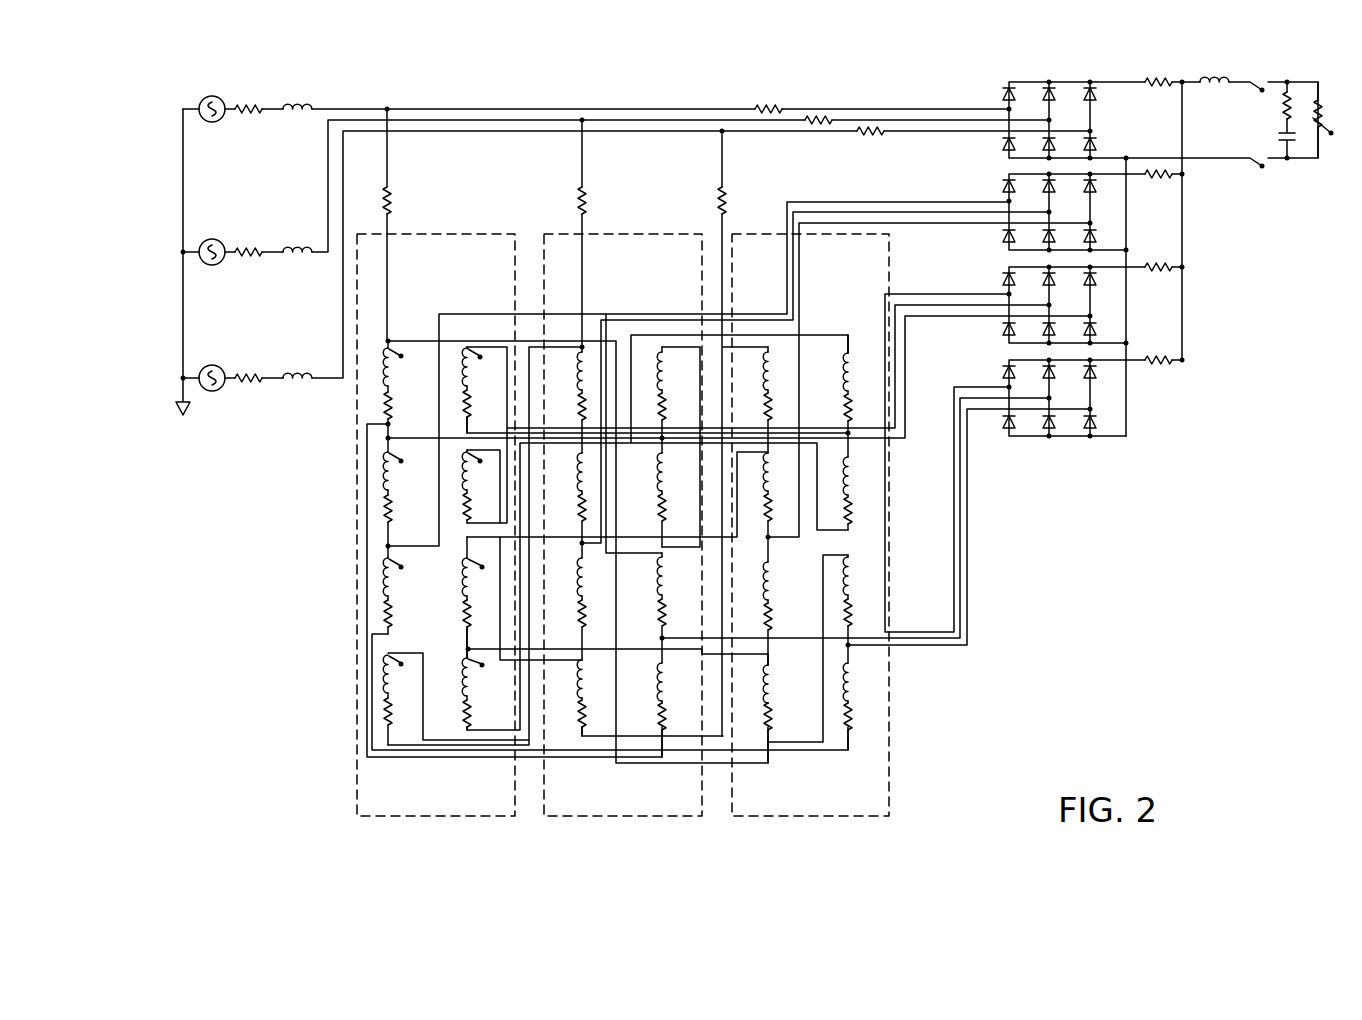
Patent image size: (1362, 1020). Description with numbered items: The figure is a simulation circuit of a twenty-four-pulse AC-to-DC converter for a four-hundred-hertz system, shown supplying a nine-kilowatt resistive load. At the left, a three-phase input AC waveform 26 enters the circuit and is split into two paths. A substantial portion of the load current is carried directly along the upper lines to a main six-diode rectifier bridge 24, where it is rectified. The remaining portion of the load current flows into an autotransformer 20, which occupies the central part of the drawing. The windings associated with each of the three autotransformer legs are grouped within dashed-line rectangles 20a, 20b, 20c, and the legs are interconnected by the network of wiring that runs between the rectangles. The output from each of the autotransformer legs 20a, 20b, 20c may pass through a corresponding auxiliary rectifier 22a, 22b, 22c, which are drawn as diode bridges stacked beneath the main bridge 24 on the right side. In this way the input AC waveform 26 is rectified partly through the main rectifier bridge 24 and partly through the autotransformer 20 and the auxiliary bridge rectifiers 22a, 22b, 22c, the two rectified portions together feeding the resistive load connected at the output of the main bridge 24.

The autotransformer 20 is at (672, 488).
The autotransformer leg 20a is at (487, 816).
The autotransformer leg 20b is at (665, 816).
The autotransformer leg 20c is at (840, 816).
The auxiliary rectifier 22a is at (1140, 212).
The auxiliary rectifier 22b is at (1140, 302).
The auxiliary rectifier 22c is at (1140, 393).
The main 6-diode rectifier bridge 24 is at (1128, 116).
The input AC waveform 26 is at (183, 318).